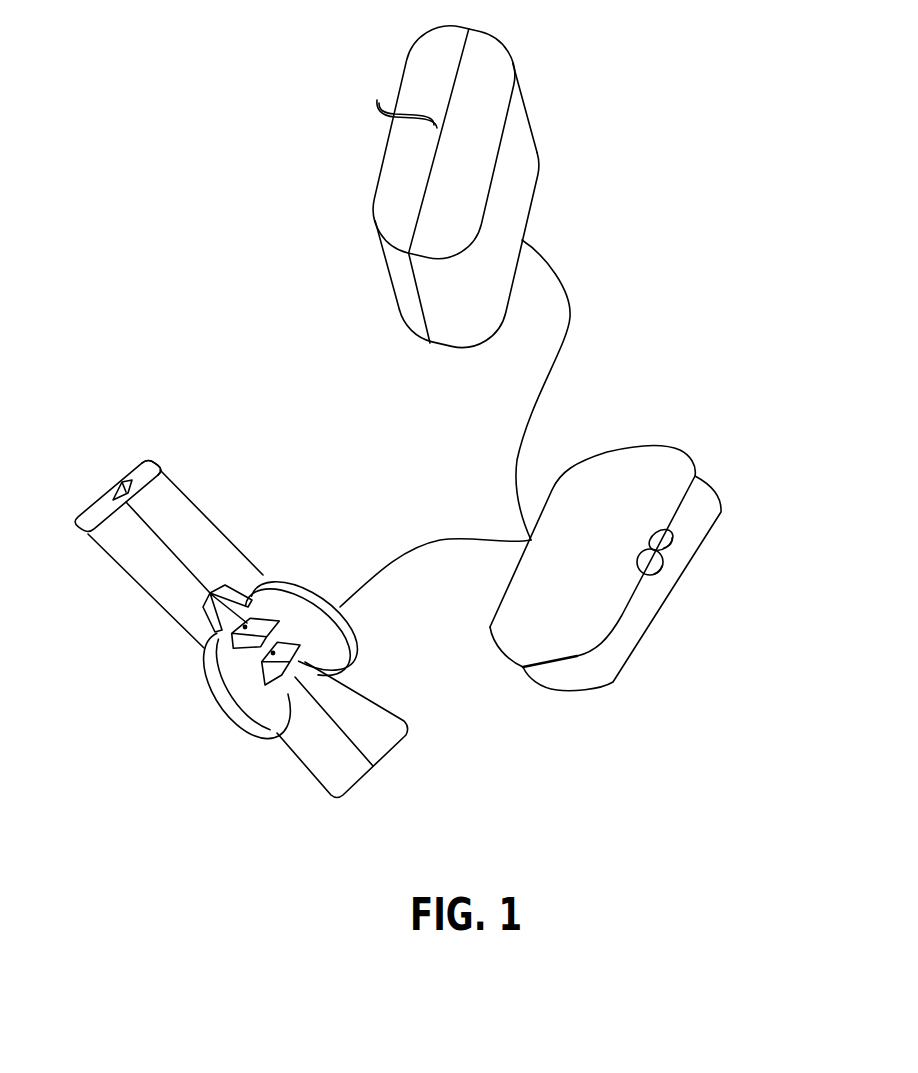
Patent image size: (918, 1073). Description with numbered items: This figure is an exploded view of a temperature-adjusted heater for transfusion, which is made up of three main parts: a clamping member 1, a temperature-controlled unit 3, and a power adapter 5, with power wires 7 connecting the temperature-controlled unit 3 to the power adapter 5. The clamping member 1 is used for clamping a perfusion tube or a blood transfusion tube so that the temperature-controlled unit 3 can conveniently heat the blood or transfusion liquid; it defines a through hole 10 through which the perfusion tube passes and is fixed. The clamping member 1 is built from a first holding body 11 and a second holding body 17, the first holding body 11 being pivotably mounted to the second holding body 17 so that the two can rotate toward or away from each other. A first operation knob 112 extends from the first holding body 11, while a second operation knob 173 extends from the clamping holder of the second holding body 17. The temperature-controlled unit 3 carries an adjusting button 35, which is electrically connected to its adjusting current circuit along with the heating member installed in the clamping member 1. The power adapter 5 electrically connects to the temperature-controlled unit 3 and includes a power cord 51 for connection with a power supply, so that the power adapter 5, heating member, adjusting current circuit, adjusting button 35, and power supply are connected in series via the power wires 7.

The clamping member 1 is at (207, 588).
The through hole 10 is at (133, 477).
The first holding body 11 is at (145, 477).
The second holding body 17 is at (98, 517).
The first operation knob 112 is at (287, 613).
The second operation knob 173 is at (233, 680).
The temperature-controlled unit 3 is at (613, 487).
The adjusting button 35 is at (667, 560).
The power adapter 5 is at (477, 100).
The power cord 51 is at (386, 108).
The power wires 7 is at (570, 317).